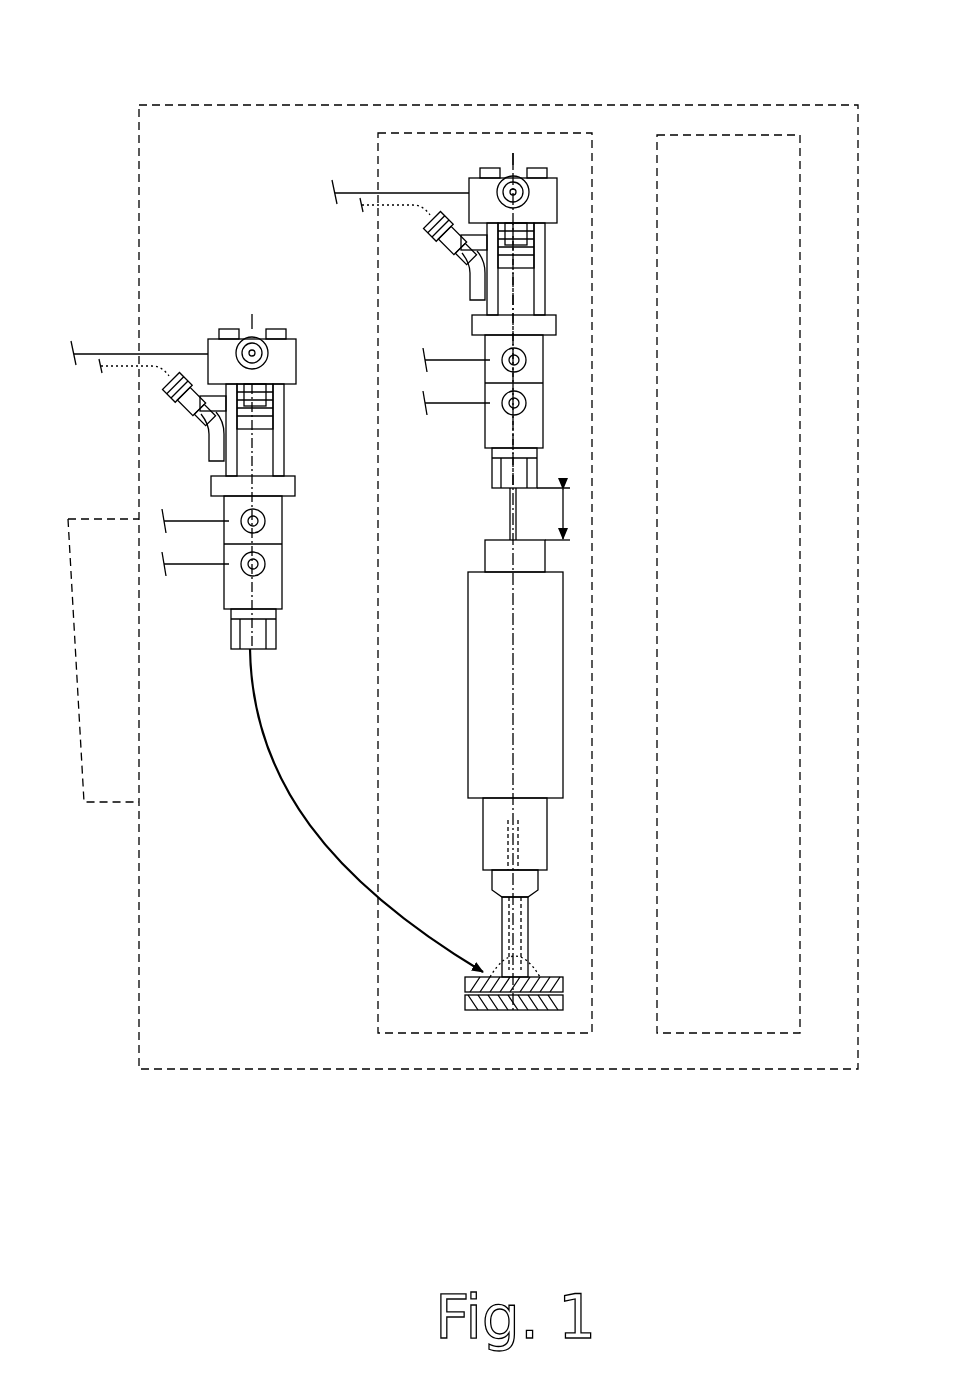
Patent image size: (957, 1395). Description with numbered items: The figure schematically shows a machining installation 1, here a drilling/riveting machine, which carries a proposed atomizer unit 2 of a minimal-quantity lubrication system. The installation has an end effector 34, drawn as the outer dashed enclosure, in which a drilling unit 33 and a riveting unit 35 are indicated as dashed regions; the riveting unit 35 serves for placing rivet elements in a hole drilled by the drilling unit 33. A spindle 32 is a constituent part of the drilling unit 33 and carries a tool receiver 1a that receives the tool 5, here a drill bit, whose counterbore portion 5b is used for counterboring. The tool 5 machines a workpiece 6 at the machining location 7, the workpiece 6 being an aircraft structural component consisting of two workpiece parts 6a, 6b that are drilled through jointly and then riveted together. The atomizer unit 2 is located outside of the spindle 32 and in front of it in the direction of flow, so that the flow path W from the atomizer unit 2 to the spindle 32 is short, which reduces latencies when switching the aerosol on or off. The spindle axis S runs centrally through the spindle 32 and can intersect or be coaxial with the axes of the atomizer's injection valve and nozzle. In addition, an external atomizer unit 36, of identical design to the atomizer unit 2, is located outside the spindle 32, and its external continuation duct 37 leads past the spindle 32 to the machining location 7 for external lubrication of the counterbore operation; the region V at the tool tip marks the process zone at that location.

The machining installation 1 is at (165, 82).
The drilling unit 33 is at (420, 133).
The riveting unit 35 is at (690, 135).
The end effector 34 is at (763, 105).
The atomizer unit 2 is at (553, 288).
The external atomizer unit 36 is at (290, 440).
The flow path W is at (565, 513).
The spindle 32 is at (570, 630).
The spindle axis S is at (515, 695).
The tool receiver 1a is at (547, 833).
The tool 5 is at (507, 918).
The counterbore portion 5b is at (540, 898).
The external continuation duct 37 is at (305, 838).
The machining location 7 is at (482, 973).
The process zone V is at (536, 964).
The workpiece 6 is at (539, 995).
The workpiece part 6a is at (565, 985).
The workpiece part 6b is at (565, 1000).